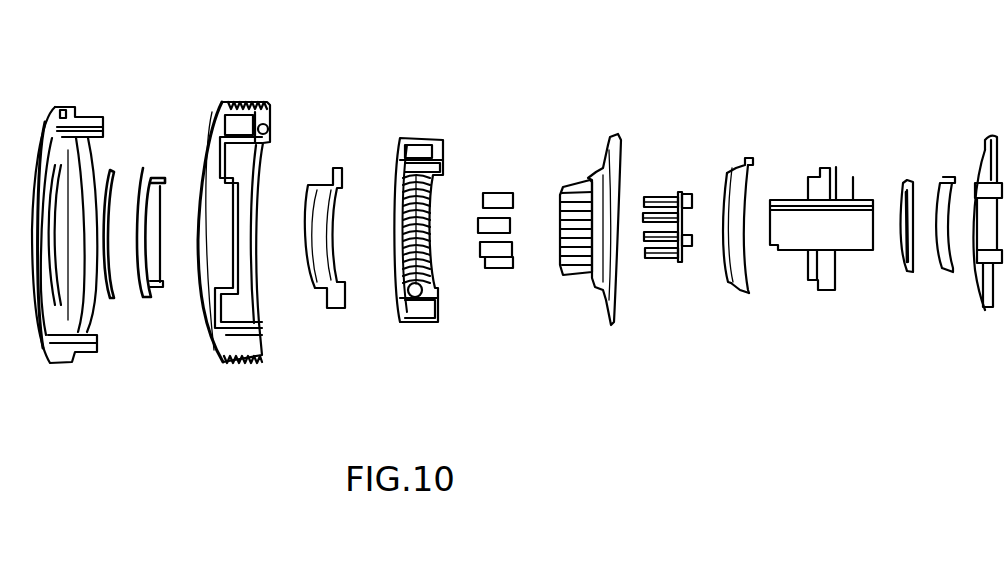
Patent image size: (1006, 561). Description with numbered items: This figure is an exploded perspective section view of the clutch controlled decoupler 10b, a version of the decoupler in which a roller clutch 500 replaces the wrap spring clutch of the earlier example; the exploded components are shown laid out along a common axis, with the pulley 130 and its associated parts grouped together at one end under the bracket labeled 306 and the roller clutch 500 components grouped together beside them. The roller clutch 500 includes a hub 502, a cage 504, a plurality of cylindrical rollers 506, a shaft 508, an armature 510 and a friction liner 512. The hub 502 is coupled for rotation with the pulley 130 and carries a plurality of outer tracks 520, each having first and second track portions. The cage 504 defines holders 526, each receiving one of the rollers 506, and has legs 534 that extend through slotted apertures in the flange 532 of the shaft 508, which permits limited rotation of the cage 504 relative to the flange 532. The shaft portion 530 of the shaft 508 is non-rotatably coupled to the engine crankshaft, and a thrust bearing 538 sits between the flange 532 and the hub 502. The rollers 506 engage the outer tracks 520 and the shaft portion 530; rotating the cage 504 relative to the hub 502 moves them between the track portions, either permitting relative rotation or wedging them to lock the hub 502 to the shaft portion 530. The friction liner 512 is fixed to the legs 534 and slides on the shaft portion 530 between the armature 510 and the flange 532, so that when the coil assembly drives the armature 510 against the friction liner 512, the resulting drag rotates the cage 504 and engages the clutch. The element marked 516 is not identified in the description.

The clutch controlled decoupler 10b is at (978, 428).
The gear housing assembly 306 is at (460, 90).
The pulley 130 is at (258, 104).
The roller clutch 500 is at (1003, 107).
The hub 502 is at (606, 140).
The cage 504 is at (683, 192).
The cylindrical rollers 506 is at (492, 268).
The shaft 508 is at (816, 289).
The armature 510 is at (983, 303).
The friction liner 512 is at (908, 273).
The spring 516 is at (950, 177).
The outer tracks 520 is at (570, 252).
The holders 526 is at (655, 255).
The shaft portion 530 is at (853, 177).
The flange 532 is at (836, 167).
The legs 534 is at (688, 246).
The thrust bearing 538 is at (752, 167).